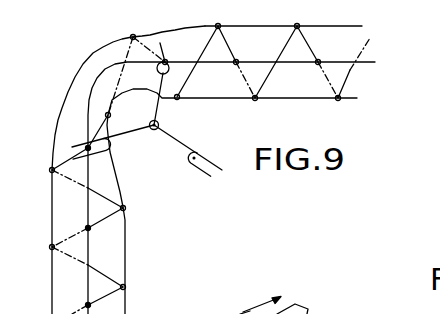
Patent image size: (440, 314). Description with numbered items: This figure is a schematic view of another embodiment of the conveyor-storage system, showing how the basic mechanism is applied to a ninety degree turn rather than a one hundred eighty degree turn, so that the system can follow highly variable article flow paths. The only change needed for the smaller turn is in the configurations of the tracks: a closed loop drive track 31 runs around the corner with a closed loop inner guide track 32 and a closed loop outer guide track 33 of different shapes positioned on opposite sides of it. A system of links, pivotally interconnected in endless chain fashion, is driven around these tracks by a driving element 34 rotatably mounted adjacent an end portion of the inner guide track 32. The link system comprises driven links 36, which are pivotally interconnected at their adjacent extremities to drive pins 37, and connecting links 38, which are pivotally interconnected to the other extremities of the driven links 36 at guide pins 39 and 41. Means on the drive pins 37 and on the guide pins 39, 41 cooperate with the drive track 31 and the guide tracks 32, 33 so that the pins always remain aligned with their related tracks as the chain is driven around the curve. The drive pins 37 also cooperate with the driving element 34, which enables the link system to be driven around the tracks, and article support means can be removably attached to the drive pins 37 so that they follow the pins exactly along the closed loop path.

The closed loop drive track 31 is at (87, 204).
The inner guide track 32 is at (125, 238).
The outer guide track 33 is at (57, 135).
The driving element 34 is at (156, 133).
The driven link 36 is at (136, 35).
The drive pin 37 is at (167, 60).
The connecting link 38 is at (206, 33).
The guide pin 39 is at (180, 99).
The guide pin 41 is at (131, 35).